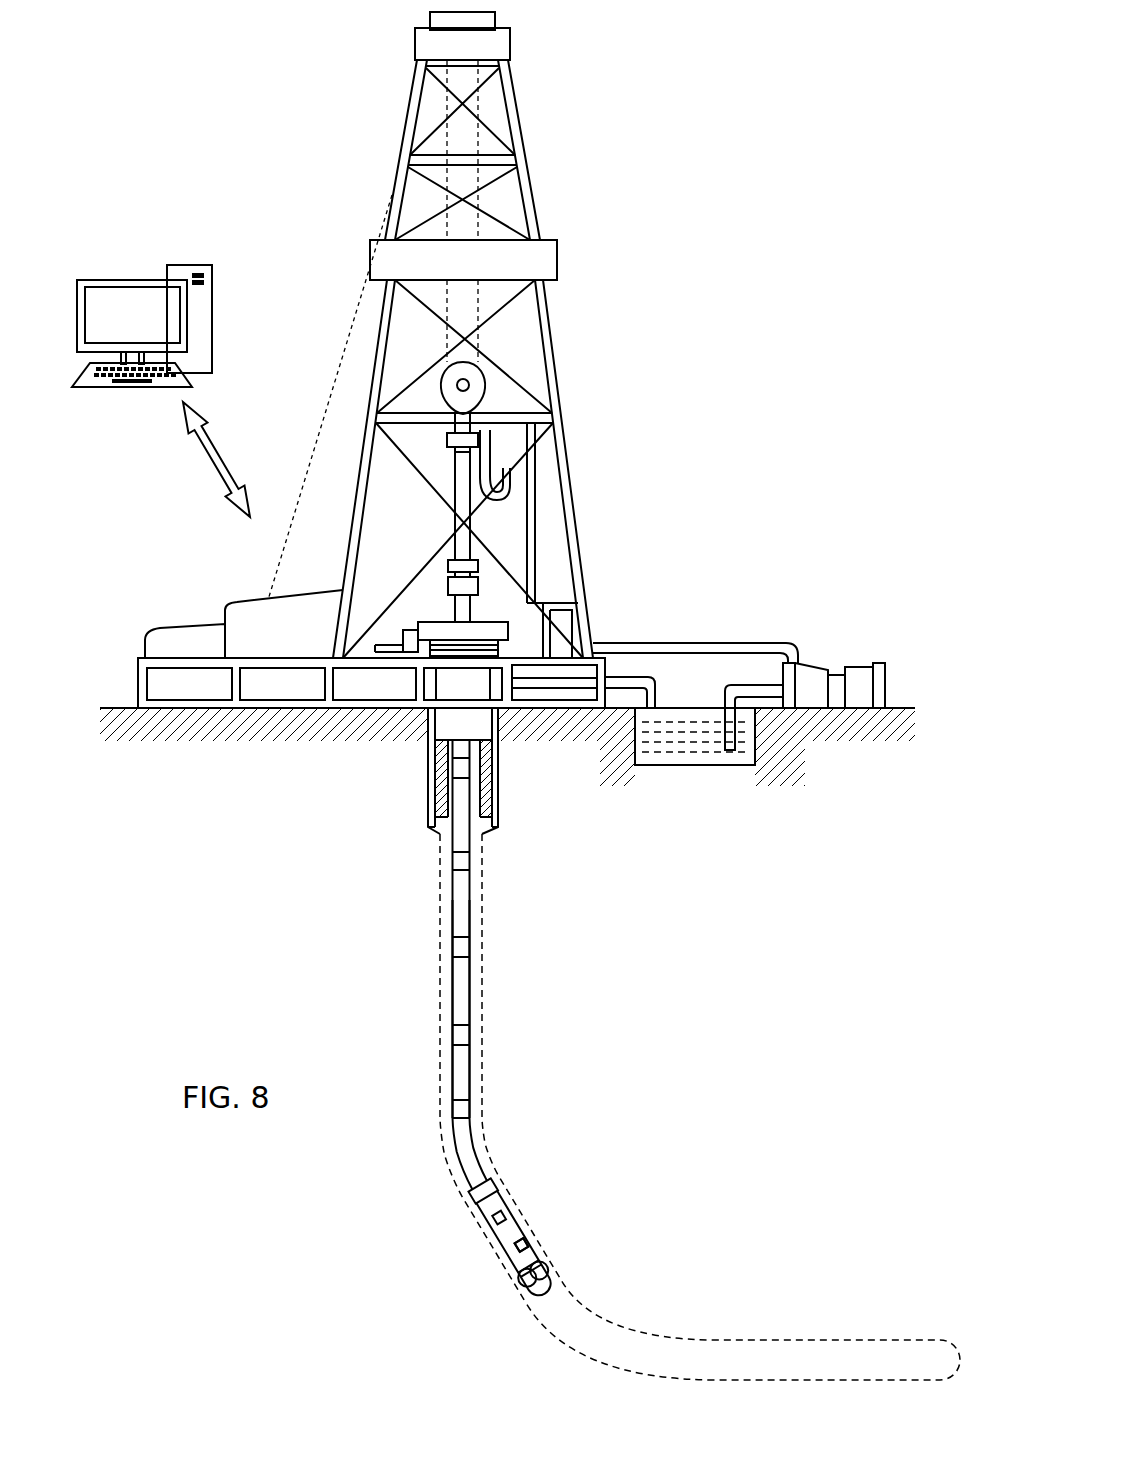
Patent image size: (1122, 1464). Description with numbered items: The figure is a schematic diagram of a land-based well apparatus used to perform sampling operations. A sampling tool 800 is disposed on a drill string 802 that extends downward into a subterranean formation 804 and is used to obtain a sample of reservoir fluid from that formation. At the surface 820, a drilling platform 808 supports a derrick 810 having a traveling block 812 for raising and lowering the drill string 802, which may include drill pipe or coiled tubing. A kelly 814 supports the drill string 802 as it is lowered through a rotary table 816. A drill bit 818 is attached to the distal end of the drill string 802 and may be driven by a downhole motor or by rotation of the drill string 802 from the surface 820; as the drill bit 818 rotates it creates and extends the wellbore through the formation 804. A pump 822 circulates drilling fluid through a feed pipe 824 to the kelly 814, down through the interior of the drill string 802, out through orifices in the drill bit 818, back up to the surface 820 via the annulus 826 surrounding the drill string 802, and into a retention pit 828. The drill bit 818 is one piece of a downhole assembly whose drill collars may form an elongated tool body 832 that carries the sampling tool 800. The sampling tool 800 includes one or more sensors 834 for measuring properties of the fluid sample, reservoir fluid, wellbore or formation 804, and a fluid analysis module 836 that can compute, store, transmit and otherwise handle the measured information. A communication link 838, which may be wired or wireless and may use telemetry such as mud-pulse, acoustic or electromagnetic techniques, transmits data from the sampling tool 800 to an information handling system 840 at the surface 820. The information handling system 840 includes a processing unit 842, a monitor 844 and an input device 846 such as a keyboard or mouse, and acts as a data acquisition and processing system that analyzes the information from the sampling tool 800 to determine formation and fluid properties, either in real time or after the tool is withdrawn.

The sampling tool 800 is at (482, 1222).
The drill string 802 is at (473, 922).
The subterranean formation 804 is at (738, 1038).
The drilling platform 808 is at (142, 685).
The derrick 810 is at (520, 152).
The traveling block 812 is at (487, 383).
The kelly 814 is at (467, 467).
The rotary table 816 is at (487, 622).
The drill bit 818 is at (558, 1272).
The surface 820 is at (897, 704).
The pump 822 is at (800, 662).
The feed pipe 824 is at (715, 642).
The annulus 826 is at (445, 875).
The retention pit 828 is at (700, 760).
The tool body 832 is at (505, 1197).
The sensors 834 is at (536, 1240).
The fluid analysis module 836 is at (500, 1219).
The communication link 838 is at (221, 440).
The information handling system 840 is at (191, 291).
The processing unit 842 is at (213, 307).
The monitor 844 is at (82, 303).
The input device 846 is at (87, 387).